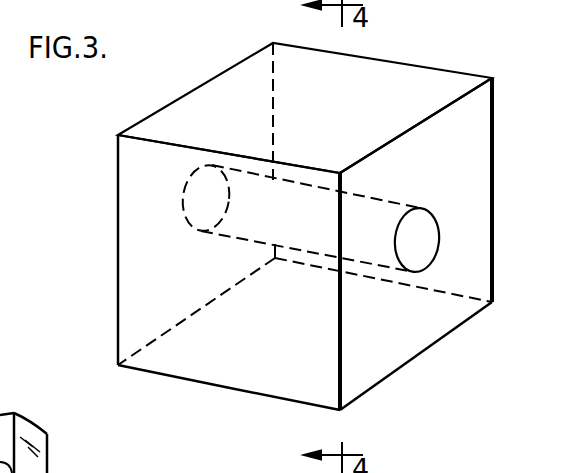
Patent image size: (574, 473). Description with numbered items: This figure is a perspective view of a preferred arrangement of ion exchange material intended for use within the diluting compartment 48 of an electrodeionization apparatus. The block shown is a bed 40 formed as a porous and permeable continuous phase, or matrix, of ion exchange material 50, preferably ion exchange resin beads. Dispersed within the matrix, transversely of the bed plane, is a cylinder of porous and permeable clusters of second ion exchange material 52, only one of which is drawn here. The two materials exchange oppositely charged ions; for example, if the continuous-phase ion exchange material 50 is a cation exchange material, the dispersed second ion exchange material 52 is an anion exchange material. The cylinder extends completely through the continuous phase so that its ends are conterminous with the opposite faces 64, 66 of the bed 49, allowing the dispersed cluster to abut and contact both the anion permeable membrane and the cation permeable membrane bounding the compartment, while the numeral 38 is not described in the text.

The block body 38 is at (473, 118).
The bed 40 is at (215, 95).
The diluting compartment 48 is at (176, 366).
The bed 49 is at (452, 350).
The ion exchange material 50 is at (265, 377).
The second ion exchange material 52 is at (425, 229).
The face of the bed 64 is at (127, 196).
The face of the bed 66 is at (472, 180).